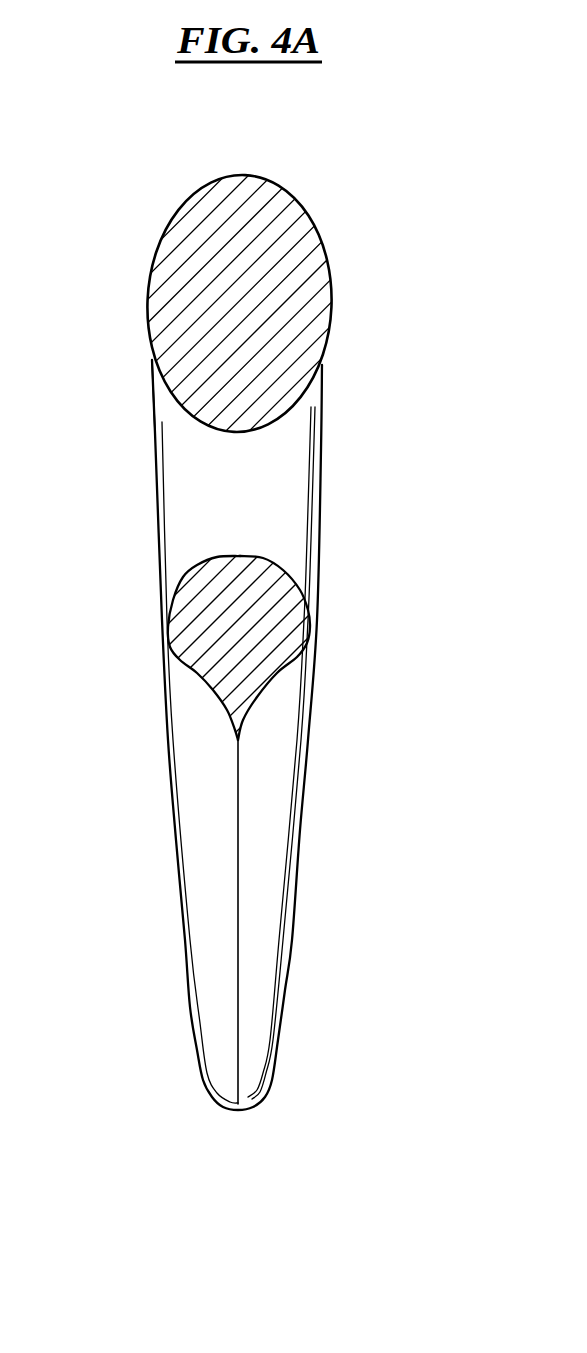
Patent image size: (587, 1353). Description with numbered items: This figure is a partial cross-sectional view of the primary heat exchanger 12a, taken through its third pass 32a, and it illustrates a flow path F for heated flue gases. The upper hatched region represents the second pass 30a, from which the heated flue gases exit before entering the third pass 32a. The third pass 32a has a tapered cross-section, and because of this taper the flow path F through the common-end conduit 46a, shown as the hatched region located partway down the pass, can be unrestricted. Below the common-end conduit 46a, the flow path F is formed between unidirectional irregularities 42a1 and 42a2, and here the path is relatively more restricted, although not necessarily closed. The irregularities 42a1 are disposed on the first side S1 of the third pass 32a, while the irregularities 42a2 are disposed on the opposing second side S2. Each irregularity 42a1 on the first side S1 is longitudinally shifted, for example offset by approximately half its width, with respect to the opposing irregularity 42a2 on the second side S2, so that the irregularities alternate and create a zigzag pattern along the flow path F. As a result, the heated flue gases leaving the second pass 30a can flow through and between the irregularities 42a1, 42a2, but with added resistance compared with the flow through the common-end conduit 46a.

The primary heat exchanger 12a is at (312, 178).
The second pass 30a is at (162, 223).
The flow path F is at (255, 252).
The common-end conduit 46a is at (308, 603).
The third pass 32a is at (312, 722).
The unidirectional irregularity 42a2 is at (215, 806).
The unidirectional irregularity 42a1 is at (272, 837).
The first side S1 is at (305, 998).
The second side S2 is at (123, 777).